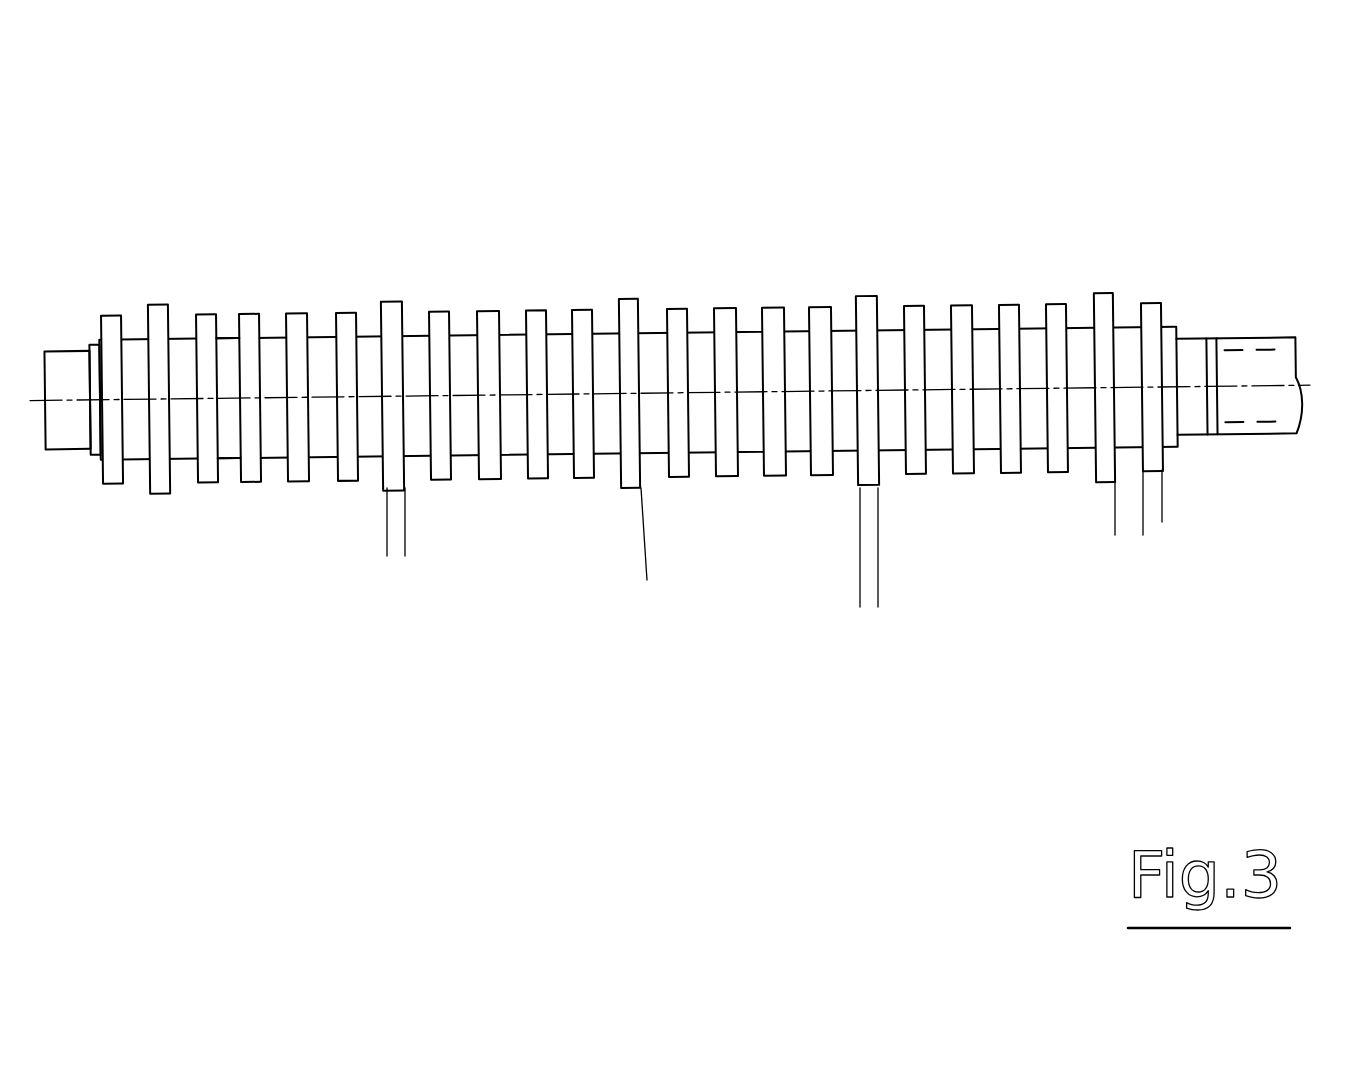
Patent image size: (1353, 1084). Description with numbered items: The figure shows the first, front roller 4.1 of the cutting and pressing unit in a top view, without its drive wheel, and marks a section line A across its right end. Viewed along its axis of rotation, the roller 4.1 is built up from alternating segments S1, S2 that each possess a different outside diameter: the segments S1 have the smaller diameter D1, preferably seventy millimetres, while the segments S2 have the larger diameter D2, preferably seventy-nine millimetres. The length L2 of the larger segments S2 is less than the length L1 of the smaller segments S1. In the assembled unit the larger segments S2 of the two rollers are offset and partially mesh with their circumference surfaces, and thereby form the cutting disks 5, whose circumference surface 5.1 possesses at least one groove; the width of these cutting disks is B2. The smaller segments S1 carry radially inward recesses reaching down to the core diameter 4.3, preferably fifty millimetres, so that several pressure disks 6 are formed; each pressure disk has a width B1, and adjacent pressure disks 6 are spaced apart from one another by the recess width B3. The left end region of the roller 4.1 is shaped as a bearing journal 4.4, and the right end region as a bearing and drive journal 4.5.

The roller 4.1 is at (1110, 244).
The core diameter 4.3 is at (233, 458).
The bearing journal 4.4 is at (65, 450).
The bearing and drive journal 4.5 is at (1242, 440).
The cutting disk 5 is at (160, 492).
The circumference surface 5.1 is at (392, 294).
The pressure disk 6 is at (302, 483).
The smaller outside diameter D1 is at (582, 510).
The larger outside diameter D2 is at (627, 540).
The width of the pressure disks B1 is at (1135, 507).
The width of the cutting disks B2 is at (445, 550).
The width of the recess B3 is at (1143, 528).
The length of the smaller-diameter segments L1 is at (860, 562).
The length of the larger-diameter segments L2 is at (810, 600).
The segment S1 is at (749, 600).
The segment S2 is at (875, 618).
The section line A- A is at (1273, 322).